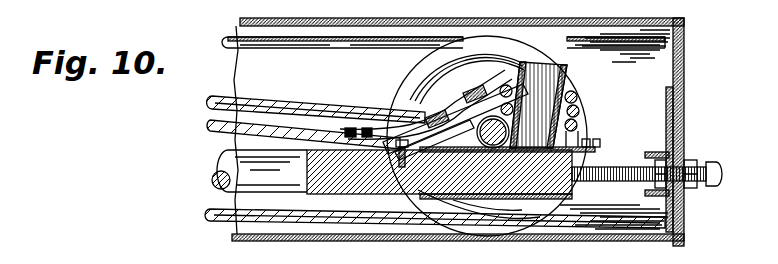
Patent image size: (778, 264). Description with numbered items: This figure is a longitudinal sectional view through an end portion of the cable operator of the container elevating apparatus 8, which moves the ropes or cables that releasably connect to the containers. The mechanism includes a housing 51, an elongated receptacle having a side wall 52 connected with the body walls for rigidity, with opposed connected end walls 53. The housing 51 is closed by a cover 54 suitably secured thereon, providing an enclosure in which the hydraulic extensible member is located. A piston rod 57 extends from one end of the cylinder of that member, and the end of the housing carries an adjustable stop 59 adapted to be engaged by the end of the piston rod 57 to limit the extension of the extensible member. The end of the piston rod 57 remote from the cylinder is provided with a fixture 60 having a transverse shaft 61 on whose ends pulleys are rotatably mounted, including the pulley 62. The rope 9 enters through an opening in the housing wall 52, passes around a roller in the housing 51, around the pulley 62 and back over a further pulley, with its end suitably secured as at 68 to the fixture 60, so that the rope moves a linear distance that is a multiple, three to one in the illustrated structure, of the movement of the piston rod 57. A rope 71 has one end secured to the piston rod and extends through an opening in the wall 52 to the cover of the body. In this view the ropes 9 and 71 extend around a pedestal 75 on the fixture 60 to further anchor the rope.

The container elevating apparatus 8 is at (684, 241).
The rope 9 is at (232, 43).
The housing 51 is at (684, 22).
The side wall 52 is at (660, 77).
The end wall 53 is at (682, 143).
The cover 54 is at (585, 26).
The piston rod 57 is at (213, 185).
The adjustable stop 59 is at (625, 182).
The fixture 60 is at (563, 137).
The transverse shaft 61 is at (482, 129).
The pulley 62 is at (420, 88).
The rope end securement 68 is at (450, 80).
The rope 71 is at (206, 131).
The pedestal 75 is at (567, 81).